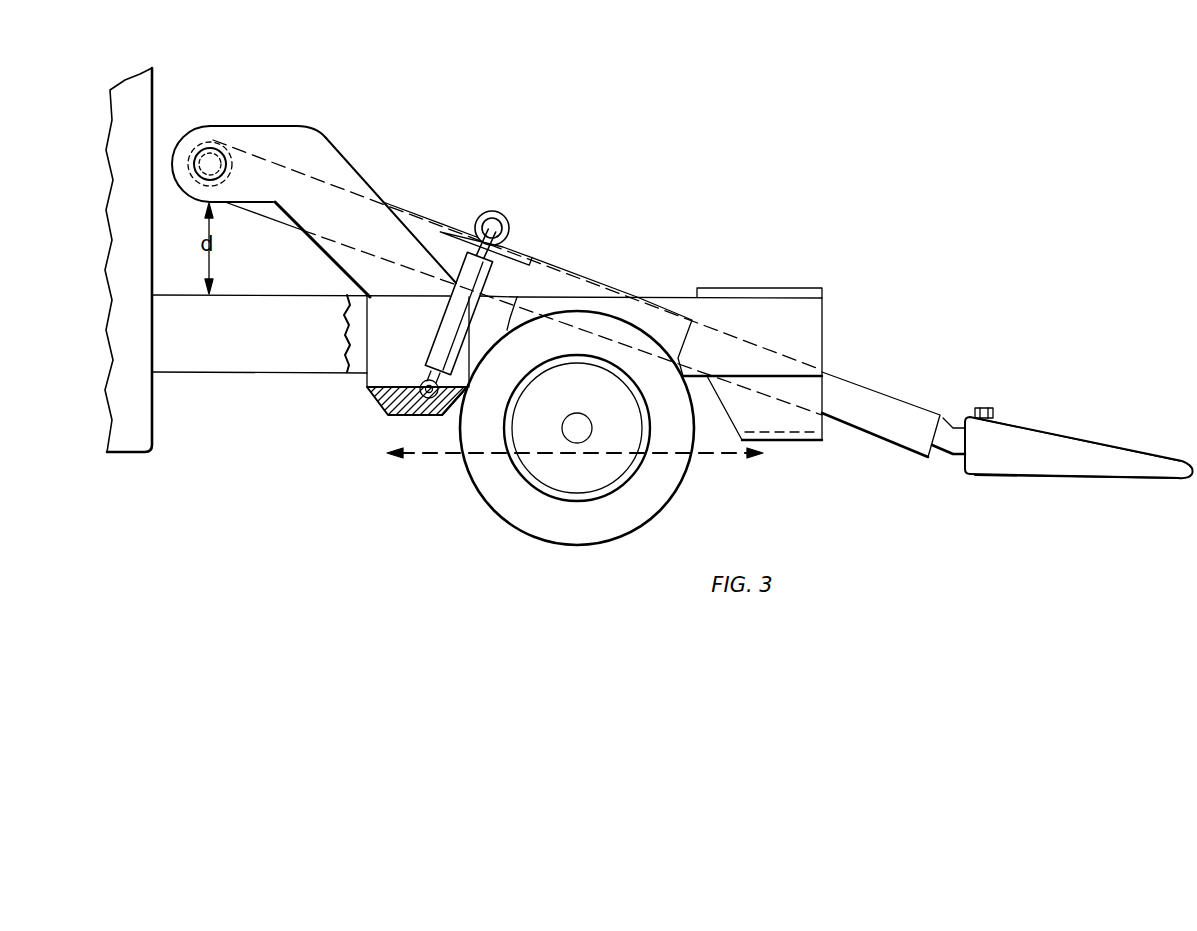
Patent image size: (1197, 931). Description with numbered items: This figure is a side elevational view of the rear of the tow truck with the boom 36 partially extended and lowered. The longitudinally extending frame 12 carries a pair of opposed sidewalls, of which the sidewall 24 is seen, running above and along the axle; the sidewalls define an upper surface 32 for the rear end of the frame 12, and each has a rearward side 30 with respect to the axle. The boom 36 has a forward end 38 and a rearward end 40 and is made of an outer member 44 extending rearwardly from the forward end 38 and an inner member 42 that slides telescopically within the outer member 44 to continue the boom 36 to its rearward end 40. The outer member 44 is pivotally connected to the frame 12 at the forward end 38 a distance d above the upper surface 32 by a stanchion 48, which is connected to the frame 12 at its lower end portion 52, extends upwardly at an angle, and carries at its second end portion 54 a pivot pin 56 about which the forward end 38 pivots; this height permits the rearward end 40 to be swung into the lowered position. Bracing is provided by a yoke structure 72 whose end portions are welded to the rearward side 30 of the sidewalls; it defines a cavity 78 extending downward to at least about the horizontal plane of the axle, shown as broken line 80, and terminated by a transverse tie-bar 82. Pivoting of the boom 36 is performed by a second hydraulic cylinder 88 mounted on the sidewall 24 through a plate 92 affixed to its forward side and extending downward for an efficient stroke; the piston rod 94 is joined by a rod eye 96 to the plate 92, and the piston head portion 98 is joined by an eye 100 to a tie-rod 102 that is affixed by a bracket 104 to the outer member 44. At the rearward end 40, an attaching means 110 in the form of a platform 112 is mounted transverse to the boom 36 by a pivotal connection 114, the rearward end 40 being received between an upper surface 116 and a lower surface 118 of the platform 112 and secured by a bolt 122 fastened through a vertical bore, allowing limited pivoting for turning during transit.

The frame 12 is at (182, 410).
The sidewall 24 is at (260, 337).
The rearward side 30 is at (745, 296).
The upper surface 32 is at (248, 294).
The boom 36 is at (428, 222).
The forward end 38 is at (221, 142).
The rearward end 40 is at (893, 386).
The inner member 42 is at (848, 378).
The outer member 44 is at (560, 268).
The stanchion 48 is at (314, 132).
The lower end portion 52 is at (333, 262).
The second end portion 54 is at (205, 125).
The pivot pin 56 is at (517, 277).
The yoke structure 72 is at (712, 472).
The cavity 78 is at (832, 406).
The broken line 80 is at (574, 454).
The tie-bar 82 is at (827, 440).
The second hydraulic cylinder 88 is at (455, 313).
The plate 92 is at (400, 416).
The piston rod 94 is at (455, 412).
The rod eye 96 is at (424, 382).
The piston head portion 98 is at (495, 257).
The eye 100 is at (491, 211).
The tie-rod 102 is at (508, 222).
The bracket 104 is at (447, 222).
The attaching means 110 is at (1081, 436).
The platform 112 is at (1055, 460).
The pivotal connection 114 is at (963, 427).
The upper surface 116 is at (1069, 437).
The lower surface 118 is at (1143, 482).
The bolt 122 is at (988, 409).